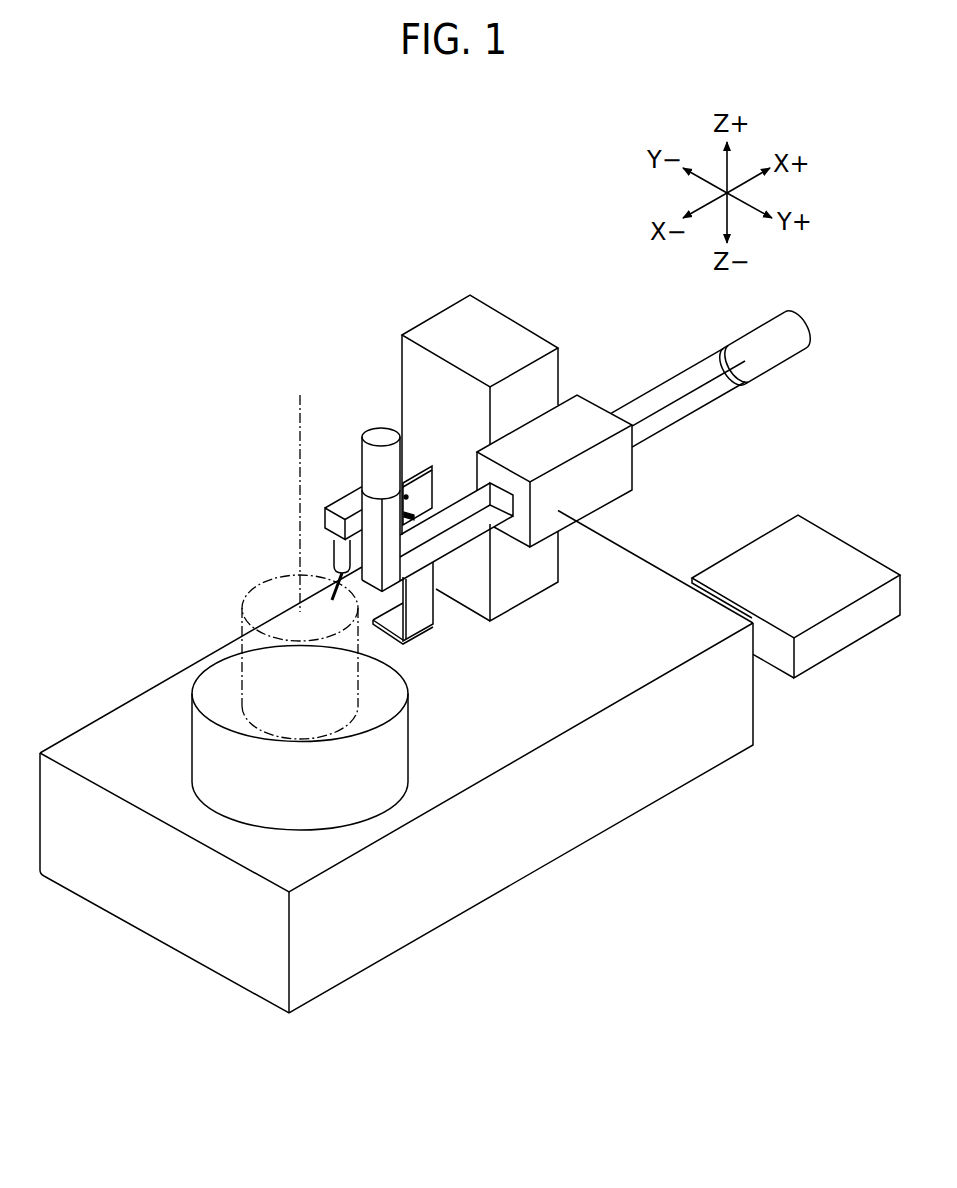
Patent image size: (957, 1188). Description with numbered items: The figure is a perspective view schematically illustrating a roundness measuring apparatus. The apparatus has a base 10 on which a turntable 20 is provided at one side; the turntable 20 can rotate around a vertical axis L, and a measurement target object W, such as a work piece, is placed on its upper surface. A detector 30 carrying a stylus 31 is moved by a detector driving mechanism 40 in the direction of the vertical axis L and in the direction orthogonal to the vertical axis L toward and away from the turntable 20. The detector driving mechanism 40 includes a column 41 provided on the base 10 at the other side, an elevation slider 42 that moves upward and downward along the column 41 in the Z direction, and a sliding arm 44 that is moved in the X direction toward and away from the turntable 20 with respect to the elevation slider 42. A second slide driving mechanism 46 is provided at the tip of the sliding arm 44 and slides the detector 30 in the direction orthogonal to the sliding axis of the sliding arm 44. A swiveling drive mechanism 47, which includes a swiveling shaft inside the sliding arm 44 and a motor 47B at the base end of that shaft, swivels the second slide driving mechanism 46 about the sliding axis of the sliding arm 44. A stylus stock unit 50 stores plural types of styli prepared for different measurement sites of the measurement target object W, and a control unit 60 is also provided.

The base 10 is at (495, 880).
The turntable 20 is at (223, 695).
The detector 30 is at (335, 550).
The stylus 31 is at (418, 518).
The detector driving mechanism 40 is at (430, 223).
The column 41 is at (488, 320).
The elevation slider 42 is at (585, 407).
The sliding arm 44 is at (683, 413).
The second slide driving mechanism 46 is at (380, 431).
The swiveling drive mechanism 47 is at (773, 357).
The motor 47B is at (803, 362).
The stylus stock unit 50 is at (425, 482).
The control unit 60 is at (854, 631).
The measurement target object W is at (241, 614).
The vertical axis L is at (297, 490).